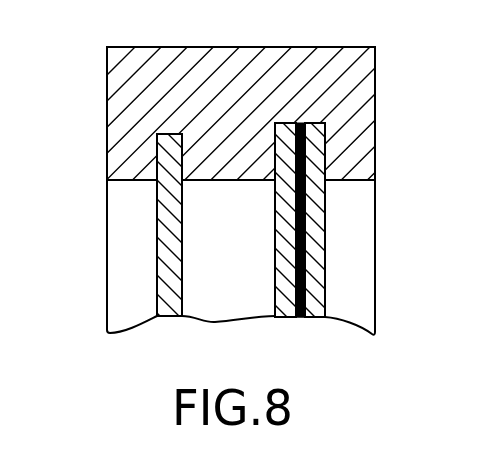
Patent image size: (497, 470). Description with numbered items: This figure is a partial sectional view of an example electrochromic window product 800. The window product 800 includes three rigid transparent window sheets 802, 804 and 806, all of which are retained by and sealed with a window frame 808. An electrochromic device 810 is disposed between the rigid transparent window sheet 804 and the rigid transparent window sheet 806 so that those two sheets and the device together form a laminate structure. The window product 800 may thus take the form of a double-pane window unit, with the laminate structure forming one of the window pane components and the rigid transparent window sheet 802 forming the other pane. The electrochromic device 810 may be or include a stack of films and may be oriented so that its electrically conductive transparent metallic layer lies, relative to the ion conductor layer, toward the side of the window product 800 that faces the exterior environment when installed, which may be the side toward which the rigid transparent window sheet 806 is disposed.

The electrochromic window product 800 is at (412, 80).
The rigid transparent window sheet 802 is at (165, 247).
The rigid transparent window sheet 804 is at (284, 211).
The rigid transparent window sheet 806 is at (320, 217).
The window frame 808 is at (122, 111).
The electrochromic device 810 is at (304, 318).